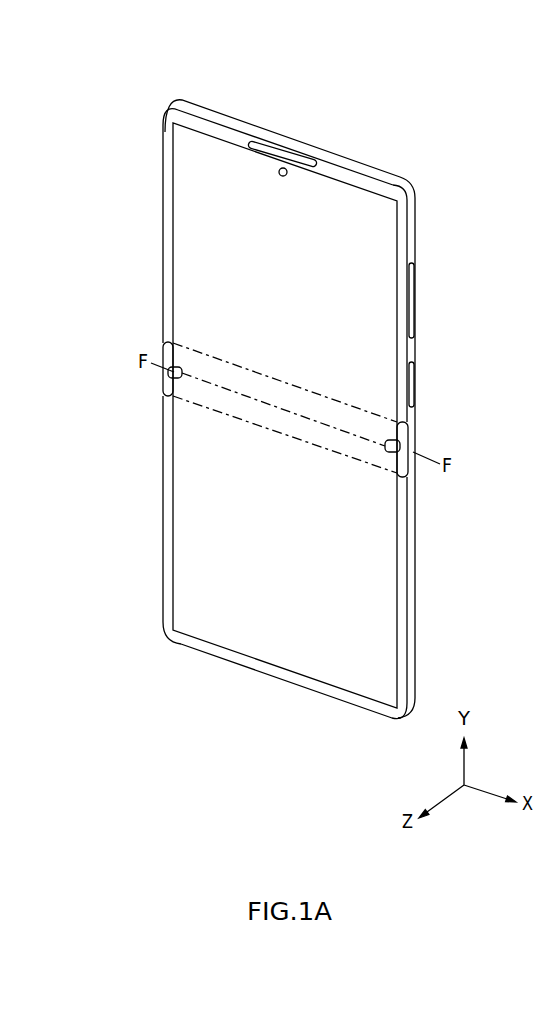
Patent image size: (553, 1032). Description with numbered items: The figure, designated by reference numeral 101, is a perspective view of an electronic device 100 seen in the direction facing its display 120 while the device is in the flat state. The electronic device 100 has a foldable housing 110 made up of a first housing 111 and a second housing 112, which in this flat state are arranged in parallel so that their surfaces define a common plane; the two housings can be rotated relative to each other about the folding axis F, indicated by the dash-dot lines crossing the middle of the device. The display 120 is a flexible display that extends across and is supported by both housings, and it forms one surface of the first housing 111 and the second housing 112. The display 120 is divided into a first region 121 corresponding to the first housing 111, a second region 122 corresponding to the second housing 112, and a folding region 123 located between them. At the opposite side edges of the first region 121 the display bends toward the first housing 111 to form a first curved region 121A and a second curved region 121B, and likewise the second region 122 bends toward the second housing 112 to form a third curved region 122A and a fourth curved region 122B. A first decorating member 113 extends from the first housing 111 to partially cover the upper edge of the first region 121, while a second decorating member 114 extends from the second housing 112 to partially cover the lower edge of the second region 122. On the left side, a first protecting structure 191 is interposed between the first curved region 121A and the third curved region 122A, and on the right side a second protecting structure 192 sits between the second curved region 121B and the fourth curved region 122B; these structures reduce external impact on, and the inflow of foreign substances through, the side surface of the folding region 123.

The electronic device 100 is at (199, 82).
The perspective view in flat state 101 is at (272, 765).
The foldable housing 110 is at (98, 683).
The first housing 111 is at (418, 180).
The second housing 112 is at (420, 580).
The first decorating member 113 is at (350, 176).
The second decorating member 114 is at (331, 695).
The display 120 is at (246, 180).
The first region 121 is at (200, 295).
The first curved region 121A is at (168, 221).
The second curved region 121B is at (397, 318).
The second region 122 is at (200, 444).
The third curved region 122A is at (168, 546).
The fourth curved region 122B is at (403, 617).
The folding region 123 is at (168, 368).
The first protecting structure 191 is at (163, 380).
The second protecting structure 192 is at (403, 437).